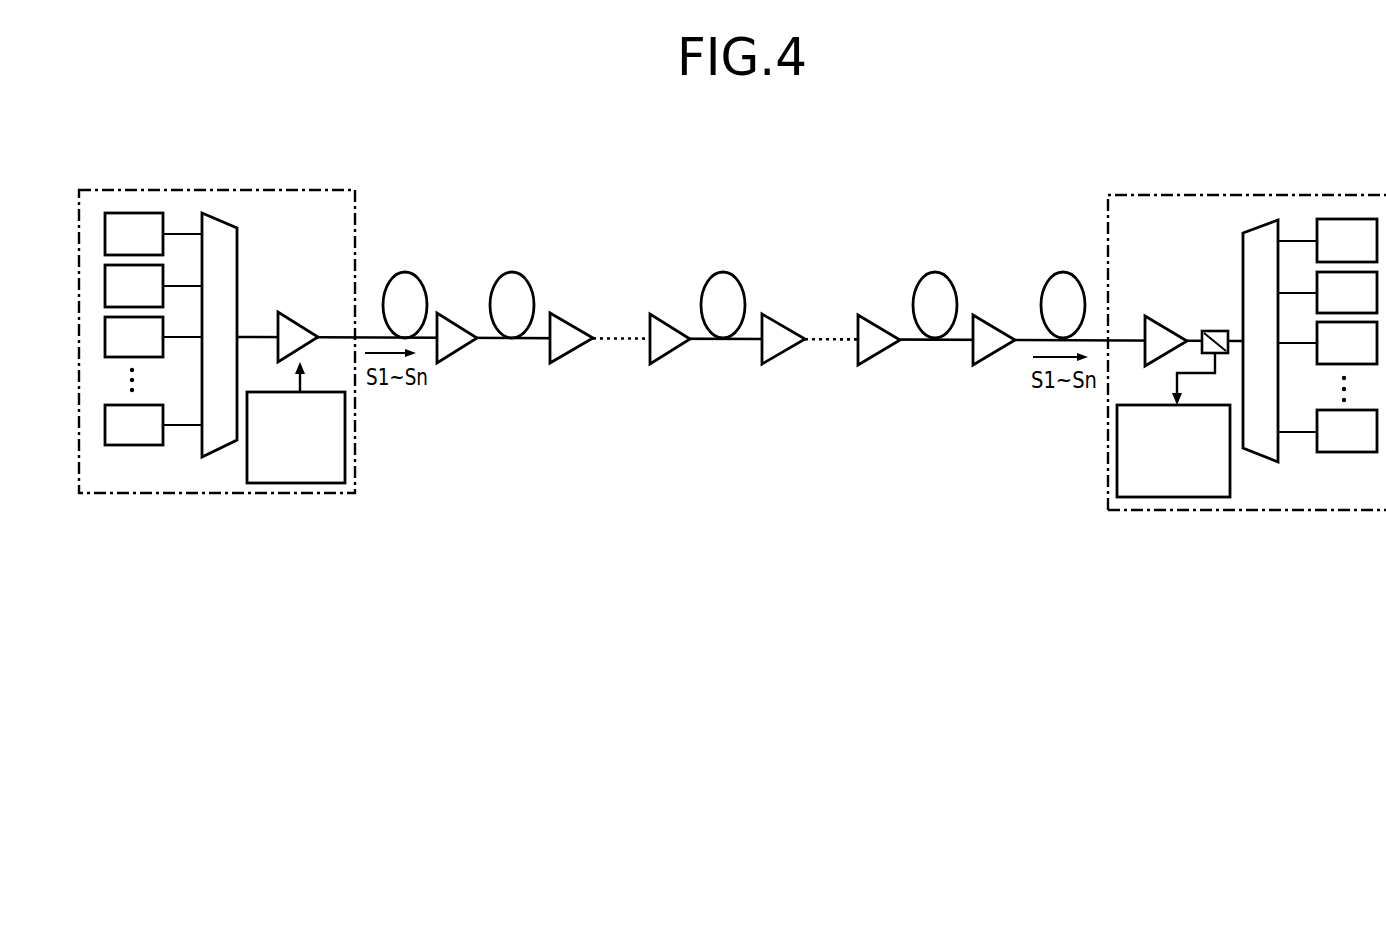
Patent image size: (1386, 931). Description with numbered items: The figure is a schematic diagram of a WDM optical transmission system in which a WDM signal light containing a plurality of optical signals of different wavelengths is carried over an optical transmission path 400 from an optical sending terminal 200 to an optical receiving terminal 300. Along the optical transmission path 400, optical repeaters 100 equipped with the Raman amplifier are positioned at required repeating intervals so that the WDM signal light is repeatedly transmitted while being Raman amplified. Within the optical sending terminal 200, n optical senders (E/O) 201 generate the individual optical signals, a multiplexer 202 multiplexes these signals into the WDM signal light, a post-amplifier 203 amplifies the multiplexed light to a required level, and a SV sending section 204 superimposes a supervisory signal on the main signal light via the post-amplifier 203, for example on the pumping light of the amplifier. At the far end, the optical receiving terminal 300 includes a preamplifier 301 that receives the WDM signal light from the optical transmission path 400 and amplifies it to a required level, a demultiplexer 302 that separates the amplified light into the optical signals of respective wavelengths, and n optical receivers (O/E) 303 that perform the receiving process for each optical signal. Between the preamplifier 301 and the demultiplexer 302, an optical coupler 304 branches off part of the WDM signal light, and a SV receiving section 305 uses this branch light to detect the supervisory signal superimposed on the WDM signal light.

The optical repeater 100 is at (729, 377).
The optical sending terminal 200 is at (148, 189).
The optical sender (E/O) 201 is at (131, 460).
The multiplexer 202 is at (219, 214).
The post-amplifier 203 is at (298, 311).
The SV sending section 204 is at (298, 484).
The optical receiving terminal 300 is at (1325, 194).
The preamplifier 301 is at (1158, 317).
The demultiplexer 302 is at (1259, 226).
The optical receiver (O/E) 303 is at (1346, 466).
The optical coupler 304 is at (1212, 330).
The SV receiving section 305 is at (1176, 498).
The optical transmission path 400 is at (734, 271).